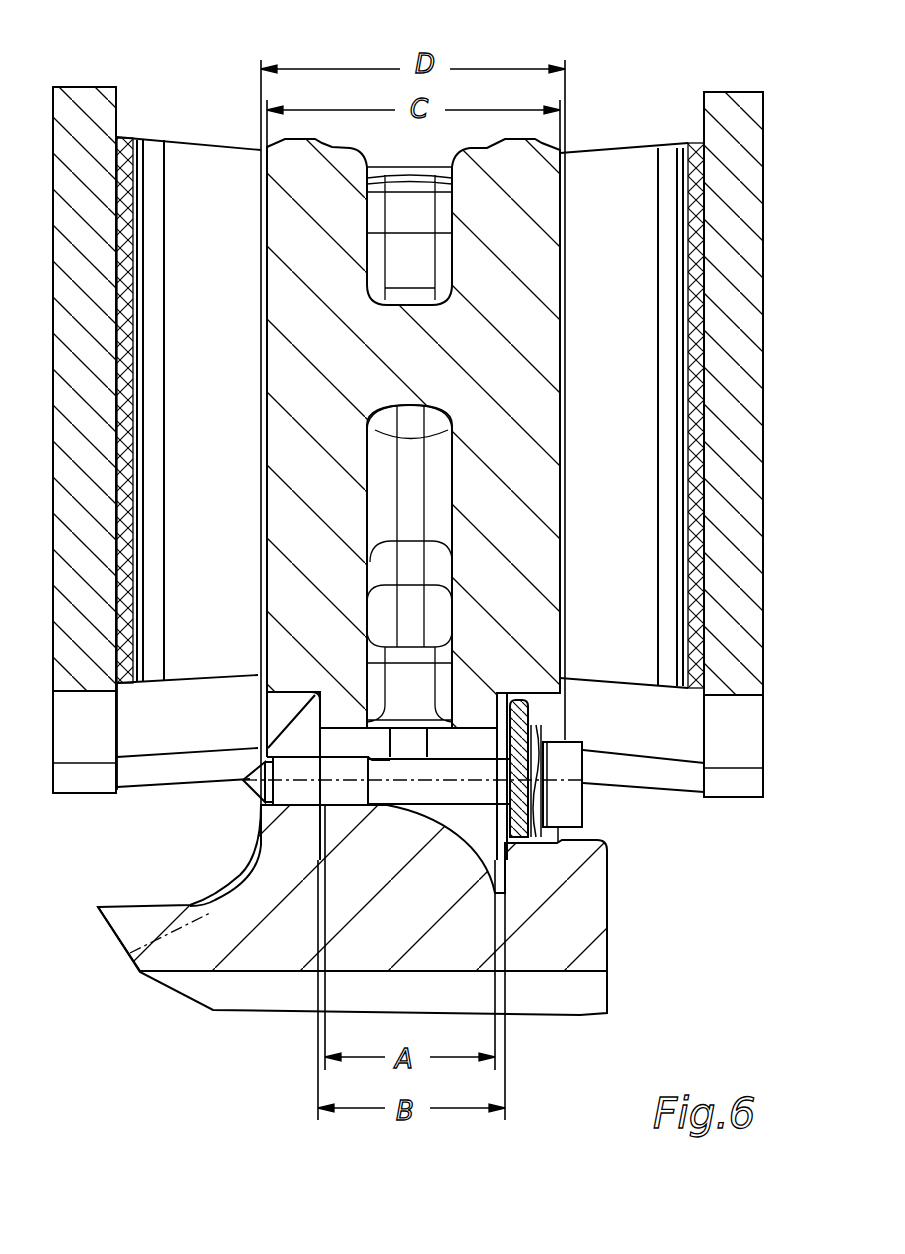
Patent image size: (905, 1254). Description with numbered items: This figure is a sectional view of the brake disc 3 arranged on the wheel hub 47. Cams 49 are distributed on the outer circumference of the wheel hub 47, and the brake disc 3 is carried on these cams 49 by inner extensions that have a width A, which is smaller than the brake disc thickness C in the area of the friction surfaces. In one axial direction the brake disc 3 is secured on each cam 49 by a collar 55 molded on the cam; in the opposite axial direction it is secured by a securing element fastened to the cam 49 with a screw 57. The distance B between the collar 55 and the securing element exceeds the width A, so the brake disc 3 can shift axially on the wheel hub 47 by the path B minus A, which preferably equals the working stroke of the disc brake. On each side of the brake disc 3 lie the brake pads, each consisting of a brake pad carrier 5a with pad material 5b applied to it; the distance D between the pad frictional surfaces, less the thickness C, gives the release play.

The brake pad carrier 5a is at (712, 88).
The pad material 5b is at (134, 108).
The brake disc 3 is at (512, 197).
The collar 55 is at (288, 705).
The screw 57 is at (565, 803).
The cam 49 is at (273, 857).
The wheel hub 47 is at (208, 927).